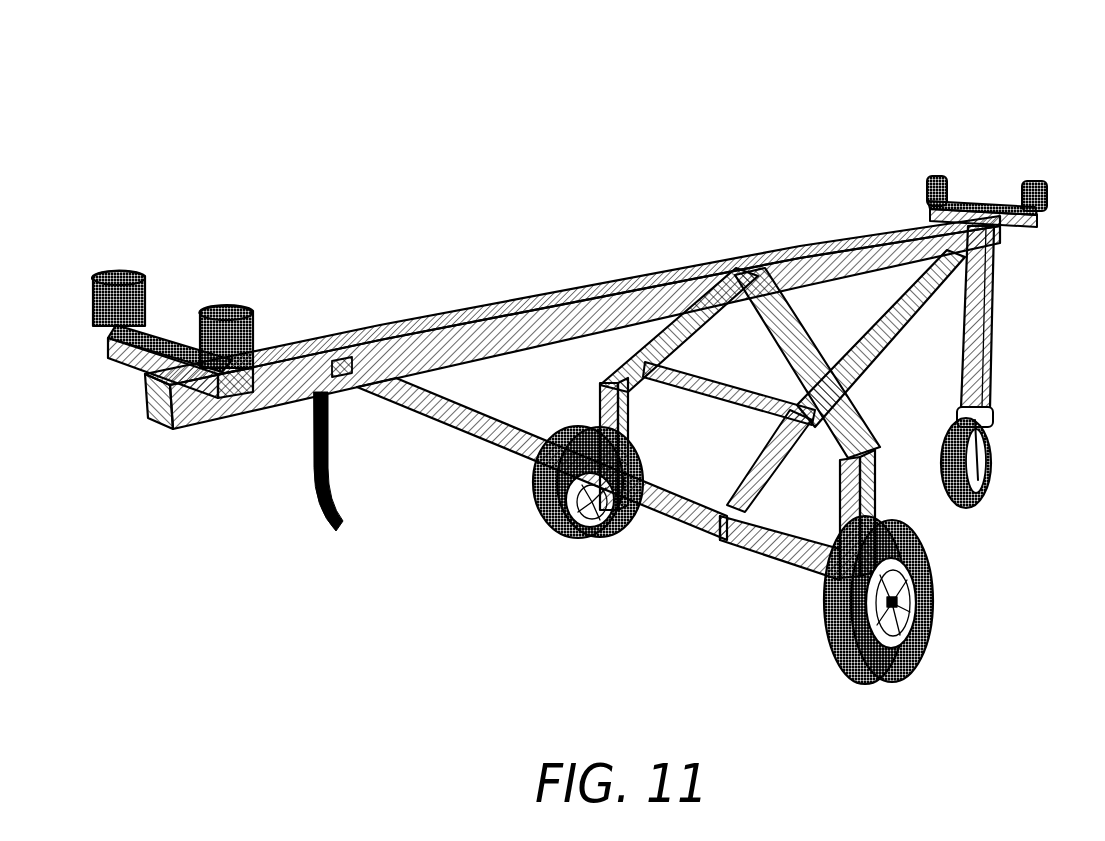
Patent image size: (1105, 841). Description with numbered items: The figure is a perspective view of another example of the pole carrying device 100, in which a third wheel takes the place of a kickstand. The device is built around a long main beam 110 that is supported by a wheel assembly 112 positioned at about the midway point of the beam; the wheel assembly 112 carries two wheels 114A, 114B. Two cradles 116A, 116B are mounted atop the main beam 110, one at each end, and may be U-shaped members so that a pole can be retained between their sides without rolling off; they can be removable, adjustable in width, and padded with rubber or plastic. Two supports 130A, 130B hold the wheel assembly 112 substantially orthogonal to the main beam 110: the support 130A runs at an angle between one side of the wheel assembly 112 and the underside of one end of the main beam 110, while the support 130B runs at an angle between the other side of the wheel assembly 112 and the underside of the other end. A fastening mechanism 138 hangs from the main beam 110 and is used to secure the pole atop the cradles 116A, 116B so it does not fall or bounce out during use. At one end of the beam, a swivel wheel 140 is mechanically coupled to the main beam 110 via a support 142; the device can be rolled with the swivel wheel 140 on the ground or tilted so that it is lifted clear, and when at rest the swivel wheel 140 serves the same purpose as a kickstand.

The pole carrying device 100 is at (373, 103).
The main beam 110 is at (480, 310).
The wheel assembly 112 is at (866, 410).
The wheel 114A is at (828, 650).
The wheel 114B is at (531, 526).
The cradle 116A is at (195, 272).
The cradle 116B is at (988, 176).
The support 130A is at (505, 437).
The support 130B is at (850, 338).
The fastening mechanism 138 is at (317, 478).
The swivel wheel 140 is at (1000, 458).
The support 142 is at (1000, 336).